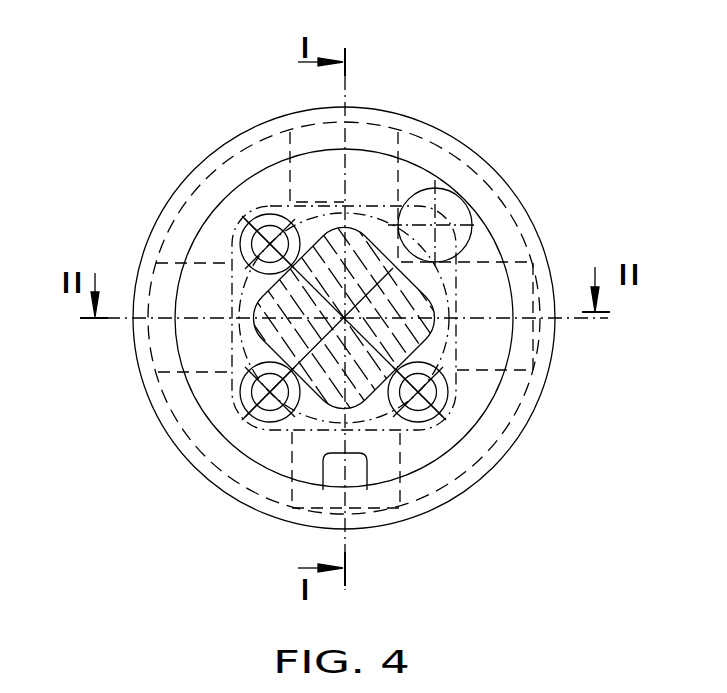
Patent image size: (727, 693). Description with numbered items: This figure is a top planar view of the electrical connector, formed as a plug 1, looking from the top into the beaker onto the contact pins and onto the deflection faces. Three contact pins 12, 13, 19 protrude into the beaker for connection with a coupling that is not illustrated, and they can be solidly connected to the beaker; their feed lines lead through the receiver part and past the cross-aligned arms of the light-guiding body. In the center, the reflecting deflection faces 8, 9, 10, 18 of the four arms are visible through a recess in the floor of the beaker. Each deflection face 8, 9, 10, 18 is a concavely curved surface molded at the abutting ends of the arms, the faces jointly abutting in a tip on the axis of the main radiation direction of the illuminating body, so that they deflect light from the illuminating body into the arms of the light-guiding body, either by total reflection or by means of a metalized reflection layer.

The plug 1 is at (198, 212).
The reflecting deflection face 8 is at (367, 400).
The reflecting deflection face 9 is at (353, 250).
The reflecting deflection face 10 is at (438, 312).
The contact pin 12 is at (427, 393).
The contact pin 13 is at (272, 398).
The reflecting deflection face 18 is at (252, 320).
The contact pin 19 is at (268, 237).